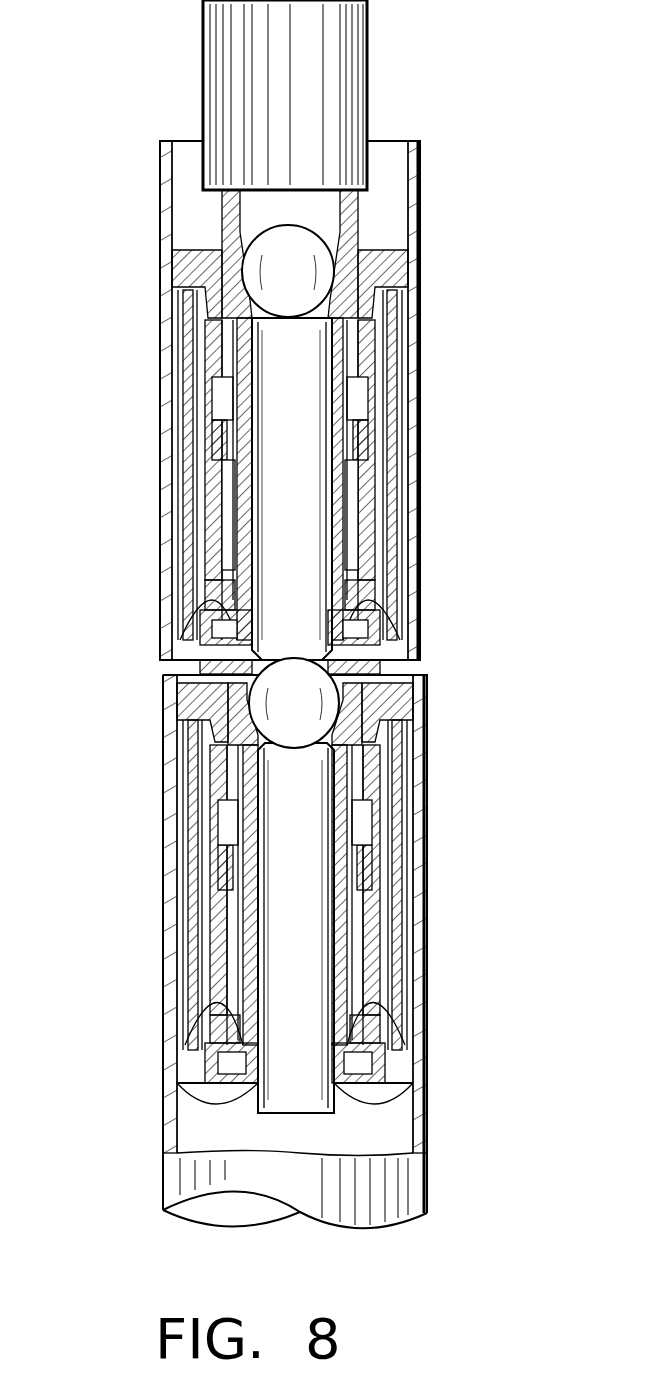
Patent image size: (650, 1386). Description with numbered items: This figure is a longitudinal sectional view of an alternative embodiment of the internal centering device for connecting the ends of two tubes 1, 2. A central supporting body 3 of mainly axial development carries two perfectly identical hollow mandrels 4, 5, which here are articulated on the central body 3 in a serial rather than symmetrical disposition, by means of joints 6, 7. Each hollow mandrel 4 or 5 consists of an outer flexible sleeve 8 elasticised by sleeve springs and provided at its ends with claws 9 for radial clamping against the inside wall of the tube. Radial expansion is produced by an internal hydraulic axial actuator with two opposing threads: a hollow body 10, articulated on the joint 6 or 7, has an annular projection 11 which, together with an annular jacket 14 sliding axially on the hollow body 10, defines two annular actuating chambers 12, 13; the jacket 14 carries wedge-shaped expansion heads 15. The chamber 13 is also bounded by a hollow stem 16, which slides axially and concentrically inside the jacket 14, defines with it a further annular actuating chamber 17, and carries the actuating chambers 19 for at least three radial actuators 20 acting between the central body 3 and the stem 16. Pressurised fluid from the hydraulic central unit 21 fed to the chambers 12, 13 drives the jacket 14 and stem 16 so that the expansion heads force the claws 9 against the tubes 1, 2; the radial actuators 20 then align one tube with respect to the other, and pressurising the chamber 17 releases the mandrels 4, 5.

The tube 1 is at (162, 216).
The tube 2 is at (170, 928).
The central supporting body 3 is at (268, 492).
The hollow mandrel 4 is at (168, 528).
The hollow mandrel 5 is at (416, 888).
The joint 6 is at (368, 300).
The joint 7 is at (395, 690).
The outer flexible sleeve 8 is at (188, 355).
The claws 9 is at (172, 268).
The hollow body 10 is at (216, 437).
The annular projection 11 is at (398, 350).
The annular actuating chamber 12 is at (205, 322).
The annular actuating chamber 13 is at (385, 403).
The annular jacket 14 is at (398, 515).
The wedge-shaped expansion heads 15 is at (188, 290).
The hollow stem 16 is at (398, 540).
The annular actuating chamber 17 is at (405, 445).
The actuating chambers 19 is at (205, 580).
The radial actuators 20 is at (172, 683).
The hydraulic central unit 21 is at (345, 95).